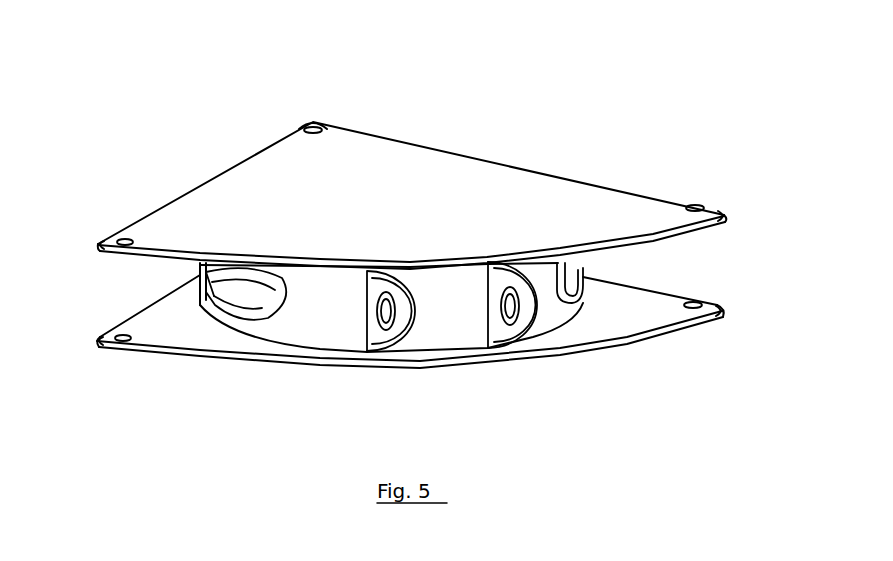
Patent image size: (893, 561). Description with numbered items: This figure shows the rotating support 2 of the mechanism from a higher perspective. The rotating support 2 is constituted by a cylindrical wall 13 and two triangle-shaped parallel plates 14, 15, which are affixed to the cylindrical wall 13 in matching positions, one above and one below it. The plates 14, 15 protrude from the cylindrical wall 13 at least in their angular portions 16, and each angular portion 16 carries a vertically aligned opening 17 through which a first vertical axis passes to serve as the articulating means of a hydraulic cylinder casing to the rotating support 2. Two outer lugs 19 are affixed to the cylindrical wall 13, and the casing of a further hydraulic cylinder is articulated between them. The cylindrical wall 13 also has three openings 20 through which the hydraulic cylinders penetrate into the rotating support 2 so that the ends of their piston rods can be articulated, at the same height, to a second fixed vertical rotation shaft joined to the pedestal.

The rotating support 2 is at (125, 296).
The cylindrical wall 13 is at (322, 320).
The triangle-shaped parallel plate 14 is at (573, 190).
The triangle-shaped parallel plate 15 is at (618, 315).
The angular portion 16 is at (313, 123).
The vertically aligned opening 17 is at (127, 240).
The outer lug 19 is at (503, 328).
The opening 20 is at (260, 305).